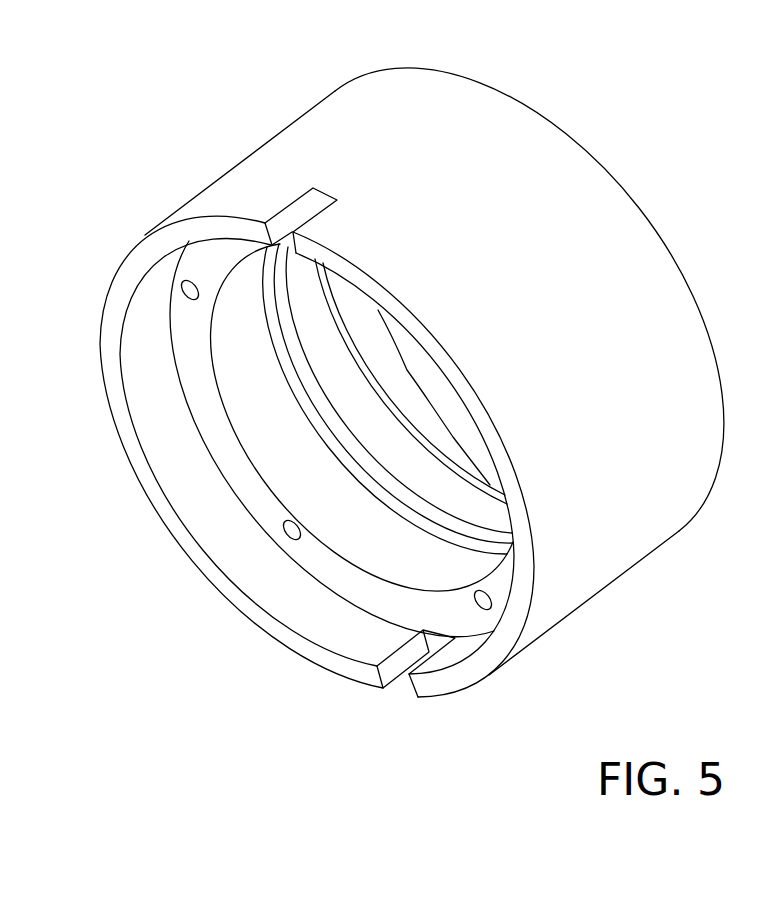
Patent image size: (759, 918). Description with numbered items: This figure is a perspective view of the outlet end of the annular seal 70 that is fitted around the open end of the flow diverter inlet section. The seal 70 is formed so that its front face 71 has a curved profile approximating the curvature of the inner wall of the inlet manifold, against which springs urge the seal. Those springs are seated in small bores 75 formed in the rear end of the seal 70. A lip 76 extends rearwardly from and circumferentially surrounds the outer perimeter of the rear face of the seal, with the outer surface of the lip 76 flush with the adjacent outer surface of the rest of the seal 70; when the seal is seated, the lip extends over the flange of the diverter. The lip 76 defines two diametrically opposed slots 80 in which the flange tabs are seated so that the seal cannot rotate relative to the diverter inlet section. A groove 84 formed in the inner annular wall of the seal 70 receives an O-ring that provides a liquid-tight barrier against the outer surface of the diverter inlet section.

The seal 70 is at (514, 273).
The front face 71 is at (612, 184).
The bores 75 is at (198, 300).
The lip 76 is at (250, 545).
The slots 80 is at (293, 218).
The groove 84 is at (352, 468).